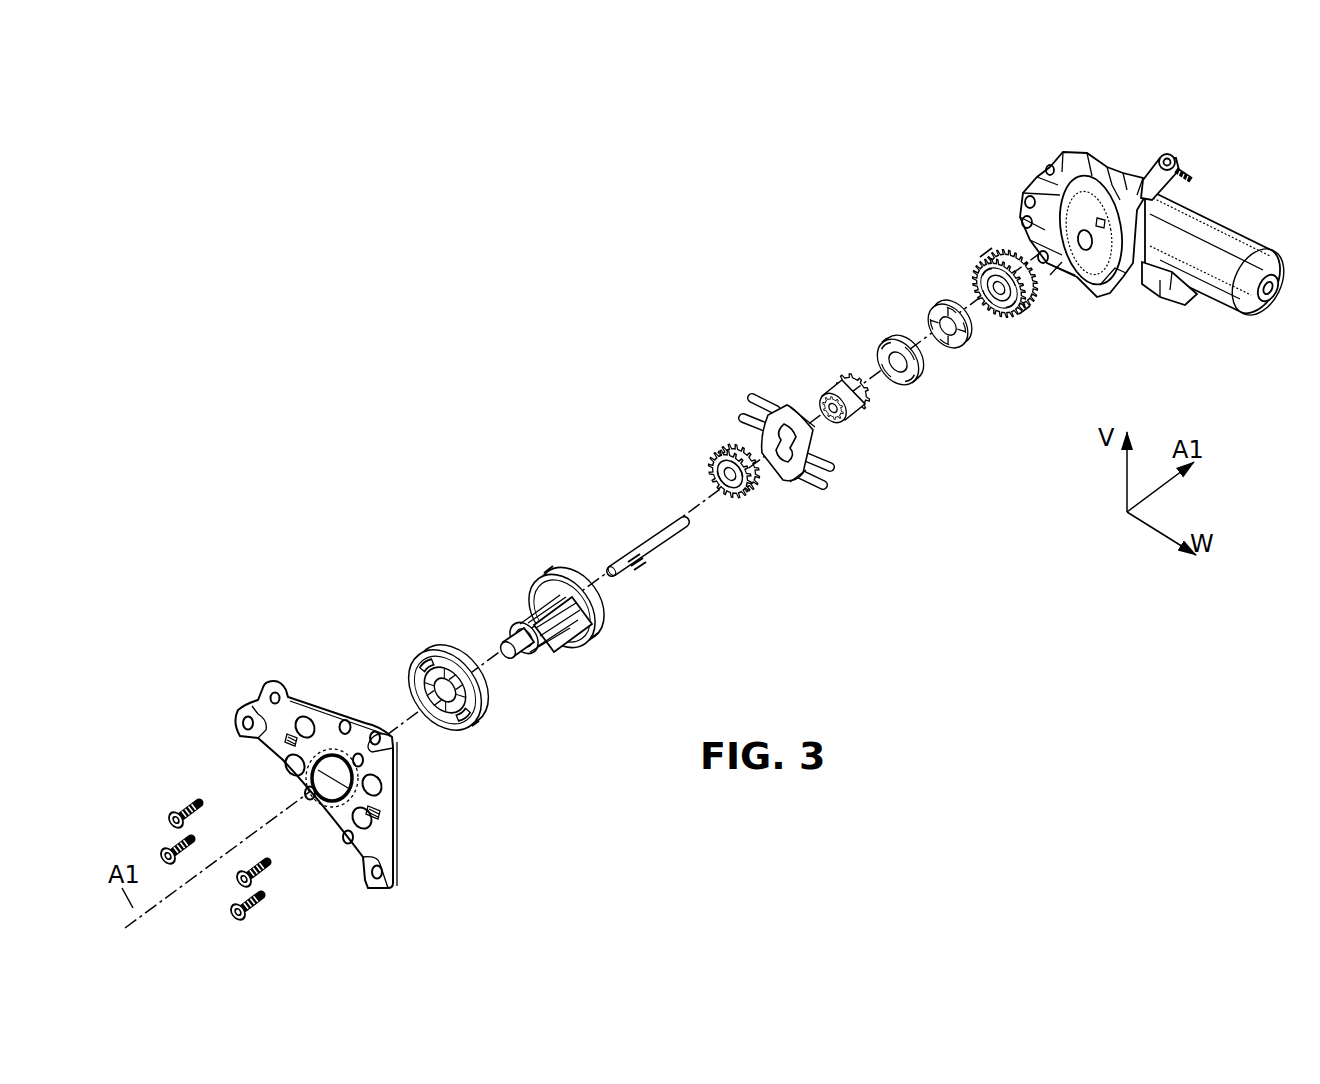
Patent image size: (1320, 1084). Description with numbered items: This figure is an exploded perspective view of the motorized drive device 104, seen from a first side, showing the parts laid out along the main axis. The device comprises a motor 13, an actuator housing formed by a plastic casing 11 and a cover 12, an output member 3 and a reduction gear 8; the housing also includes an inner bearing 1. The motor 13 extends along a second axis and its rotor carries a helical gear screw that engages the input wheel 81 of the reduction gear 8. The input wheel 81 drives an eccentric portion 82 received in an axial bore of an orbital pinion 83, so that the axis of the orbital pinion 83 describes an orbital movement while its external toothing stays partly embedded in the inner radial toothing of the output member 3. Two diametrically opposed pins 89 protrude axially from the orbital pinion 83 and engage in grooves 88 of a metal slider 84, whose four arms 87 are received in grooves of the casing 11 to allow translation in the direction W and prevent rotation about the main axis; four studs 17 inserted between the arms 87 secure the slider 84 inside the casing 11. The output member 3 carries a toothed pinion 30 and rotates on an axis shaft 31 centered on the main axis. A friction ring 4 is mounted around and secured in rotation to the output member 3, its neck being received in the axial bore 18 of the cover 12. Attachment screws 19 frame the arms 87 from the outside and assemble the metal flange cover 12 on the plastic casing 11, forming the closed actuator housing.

The inner bearing 1 is at (1082, 272).
The output member 3 is at (512, 595).
The friction ring 4 is at (413, 645).
The reduction gear 8 is at (784, 252).
The casing 11 is at (1143, 155).
The cover 12 is at (308, 693).
The motor 13 is at (1228, 210).
The studs 17 is at (382, 813).
The axial bore 18 is at (331, 785).
The attachment screws 19 is at (192, 800).
The toothed pinion 30 is at (552, 655).
The axis shaft 31 is at (653, 556).
The input wheel 81 is at (975, 247).
The eccentric portion 82 is at (822, 365).
The orbital pinion 83 is at (703, 447).
The slider 84 is at (744, 392).
The arms 87 is at (748, 422).
The grooves 88 is at (775, 472).
The pins 89 is at (738, 456).
The motorized drive device 104 is at (437, 385).